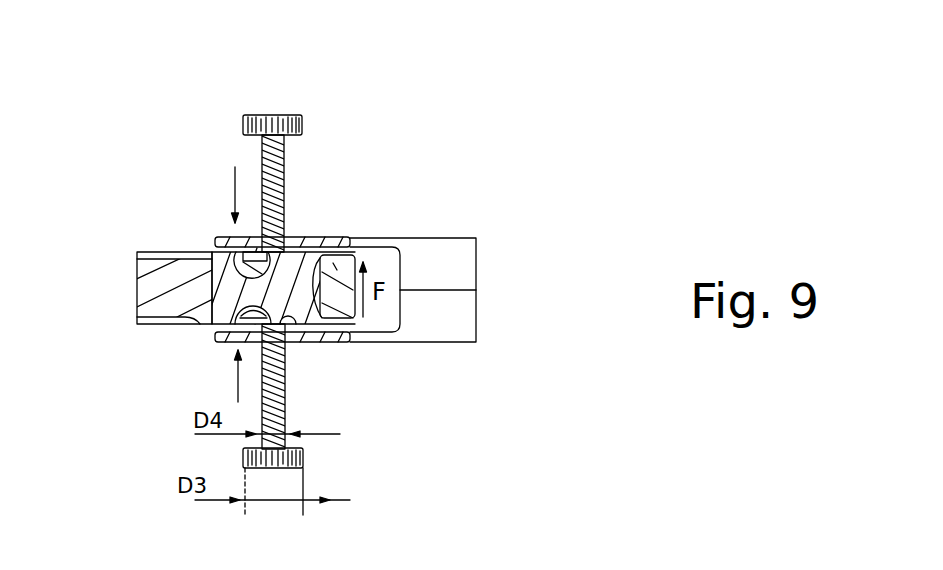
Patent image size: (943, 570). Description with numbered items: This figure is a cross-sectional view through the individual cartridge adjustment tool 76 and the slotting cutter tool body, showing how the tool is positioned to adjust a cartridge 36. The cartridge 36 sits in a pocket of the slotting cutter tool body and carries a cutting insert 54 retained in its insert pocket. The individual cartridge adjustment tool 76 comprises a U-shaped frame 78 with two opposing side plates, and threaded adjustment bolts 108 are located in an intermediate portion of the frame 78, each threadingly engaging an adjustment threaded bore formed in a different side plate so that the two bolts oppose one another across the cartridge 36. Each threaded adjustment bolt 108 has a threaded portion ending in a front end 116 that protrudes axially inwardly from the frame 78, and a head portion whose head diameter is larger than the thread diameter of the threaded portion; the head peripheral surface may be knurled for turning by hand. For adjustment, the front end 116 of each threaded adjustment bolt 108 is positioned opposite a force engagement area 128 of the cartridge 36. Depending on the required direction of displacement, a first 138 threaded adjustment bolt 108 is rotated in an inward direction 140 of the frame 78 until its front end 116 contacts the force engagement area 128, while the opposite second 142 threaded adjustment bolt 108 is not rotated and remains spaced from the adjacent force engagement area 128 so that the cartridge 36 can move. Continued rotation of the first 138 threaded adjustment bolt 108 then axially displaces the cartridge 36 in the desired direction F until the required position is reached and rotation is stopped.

The cartridge 36 is at (305, 272).
The cutting insert 54 is at (342, 262).
The individual cartridge adjustment tool 76 is at (478, 267).
The U-shaped frame 78 is at (445, 236).
The threaded adjustment bolt 108 is at (282, 113).
The front end 116 is at (300, 325).
The force engagement area 128 is at (272, 238).
The first threaded adjustment bolt 138 is at (408, 411).
The inward direction 140 is at (212, 282).
The second threaded adjustment bolt 142 is at (322, 150).